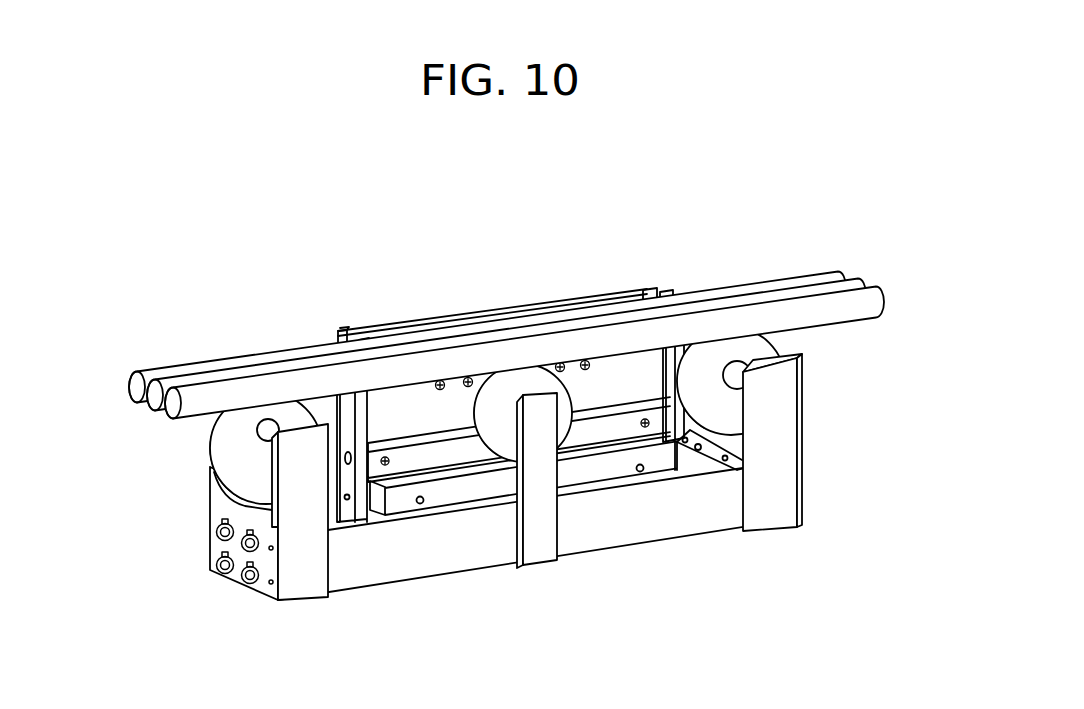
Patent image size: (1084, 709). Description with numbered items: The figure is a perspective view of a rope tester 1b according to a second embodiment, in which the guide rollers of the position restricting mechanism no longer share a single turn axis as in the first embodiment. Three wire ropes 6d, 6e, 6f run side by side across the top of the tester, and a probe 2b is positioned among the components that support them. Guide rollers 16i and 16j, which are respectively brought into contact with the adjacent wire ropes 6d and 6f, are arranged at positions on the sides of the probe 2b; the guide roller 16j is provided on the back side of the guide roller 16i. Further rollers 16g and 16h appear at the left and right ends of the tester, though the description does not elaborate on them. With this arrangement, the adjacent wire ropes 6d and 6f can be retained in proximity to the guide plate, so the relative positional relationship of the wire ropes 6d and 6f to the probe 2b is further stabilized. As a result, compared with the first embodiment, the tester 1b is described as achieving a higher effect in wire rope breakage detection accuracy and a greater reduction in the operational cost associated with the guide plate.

The rope tester 1b is at (240, 221).
The probe 2b is at (648, 312).
The wire rope 6d is at (188, 367).
The conveying rod 6e is at (230, 370).
The wire rope 6f is at (287, 380).
The roller 16g is at (240, 447).
The roller 16h is at (786, 348).
The guide roller 16i is at (530, 377).
The guide roller 16j is at (530, 302).